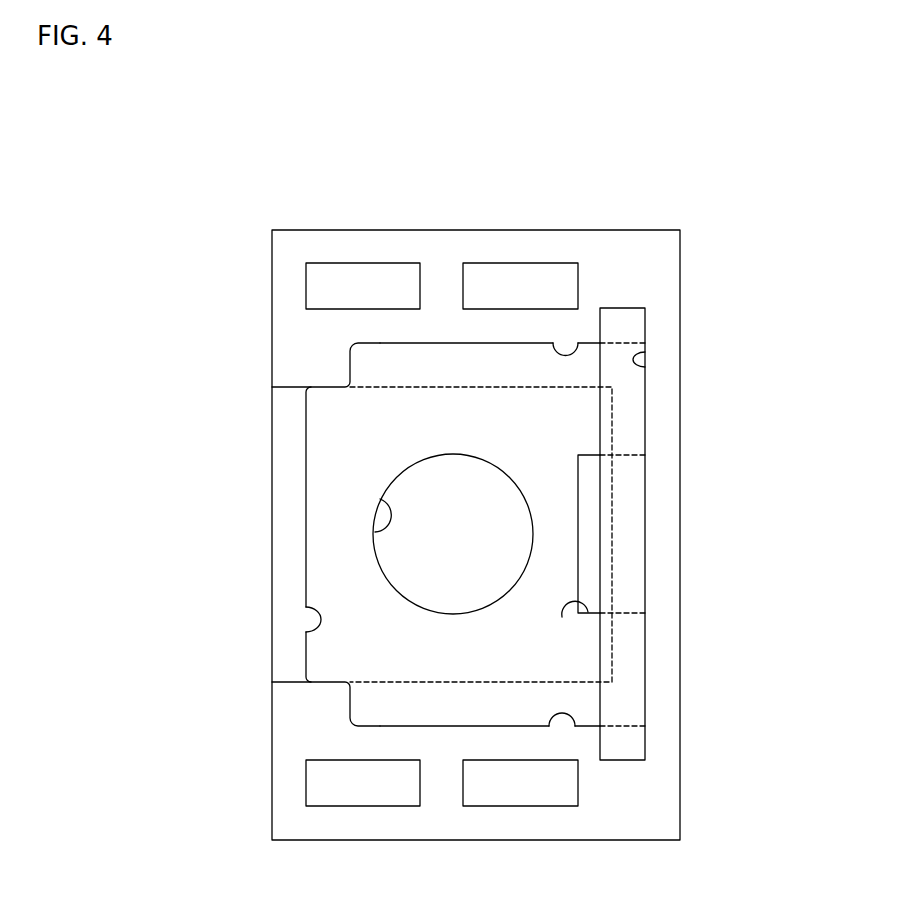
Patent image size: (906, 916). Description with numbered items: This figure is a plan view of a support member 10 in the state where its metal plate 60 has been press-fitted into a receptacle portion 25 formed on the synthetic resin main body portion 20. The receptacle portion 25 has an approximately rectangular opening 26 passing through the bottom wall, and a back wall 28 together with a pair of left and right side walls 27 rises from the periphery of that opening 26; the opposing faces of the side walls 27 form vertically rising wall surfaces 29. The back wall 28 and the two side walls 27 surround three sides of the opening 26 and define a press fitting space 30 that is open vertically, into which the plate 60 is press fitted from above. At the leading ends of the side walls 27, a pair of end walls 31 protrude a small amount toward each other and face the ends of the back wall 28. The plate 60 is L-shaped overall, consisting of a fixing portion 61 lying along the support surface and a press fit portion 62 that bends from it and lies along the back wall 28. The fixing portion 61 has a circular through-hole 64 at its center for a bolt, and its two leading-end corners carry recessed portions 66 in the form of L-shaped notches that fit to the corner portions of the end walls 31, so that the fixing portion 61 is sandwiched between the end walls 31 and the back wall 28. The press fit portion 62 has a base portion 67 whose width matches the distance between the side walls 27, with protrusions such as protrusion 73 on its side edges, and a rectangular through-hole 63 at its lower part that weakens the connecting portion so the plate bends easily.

The support member 10 is at (522, 88).
The main body portion 20 is at (680, 465).
The receptacle portion 25 is at (640, 247).
The opening 26 is at (306, 607).
The side walls 27 is at (443, 245).
The back wall 28 is at (674, 615).
The wall surfaces 29 is at (553, 343).
The press fitting space 30 is at (645, 367).
The end walls 31 is at (283, 366).
The plate 60 is at (645, 527).
The fixing portion 61 is at (330, 545).
The press fit portion 62 is at (637, 422).
The through-hole 63 is at (562, 617).
The circular through-hole 64 is at (380, 499).
The recessed portions 66 is at (350, 375).
The base portion 67 is at (633, 568).
The protrusion 73 is at (637, 320).